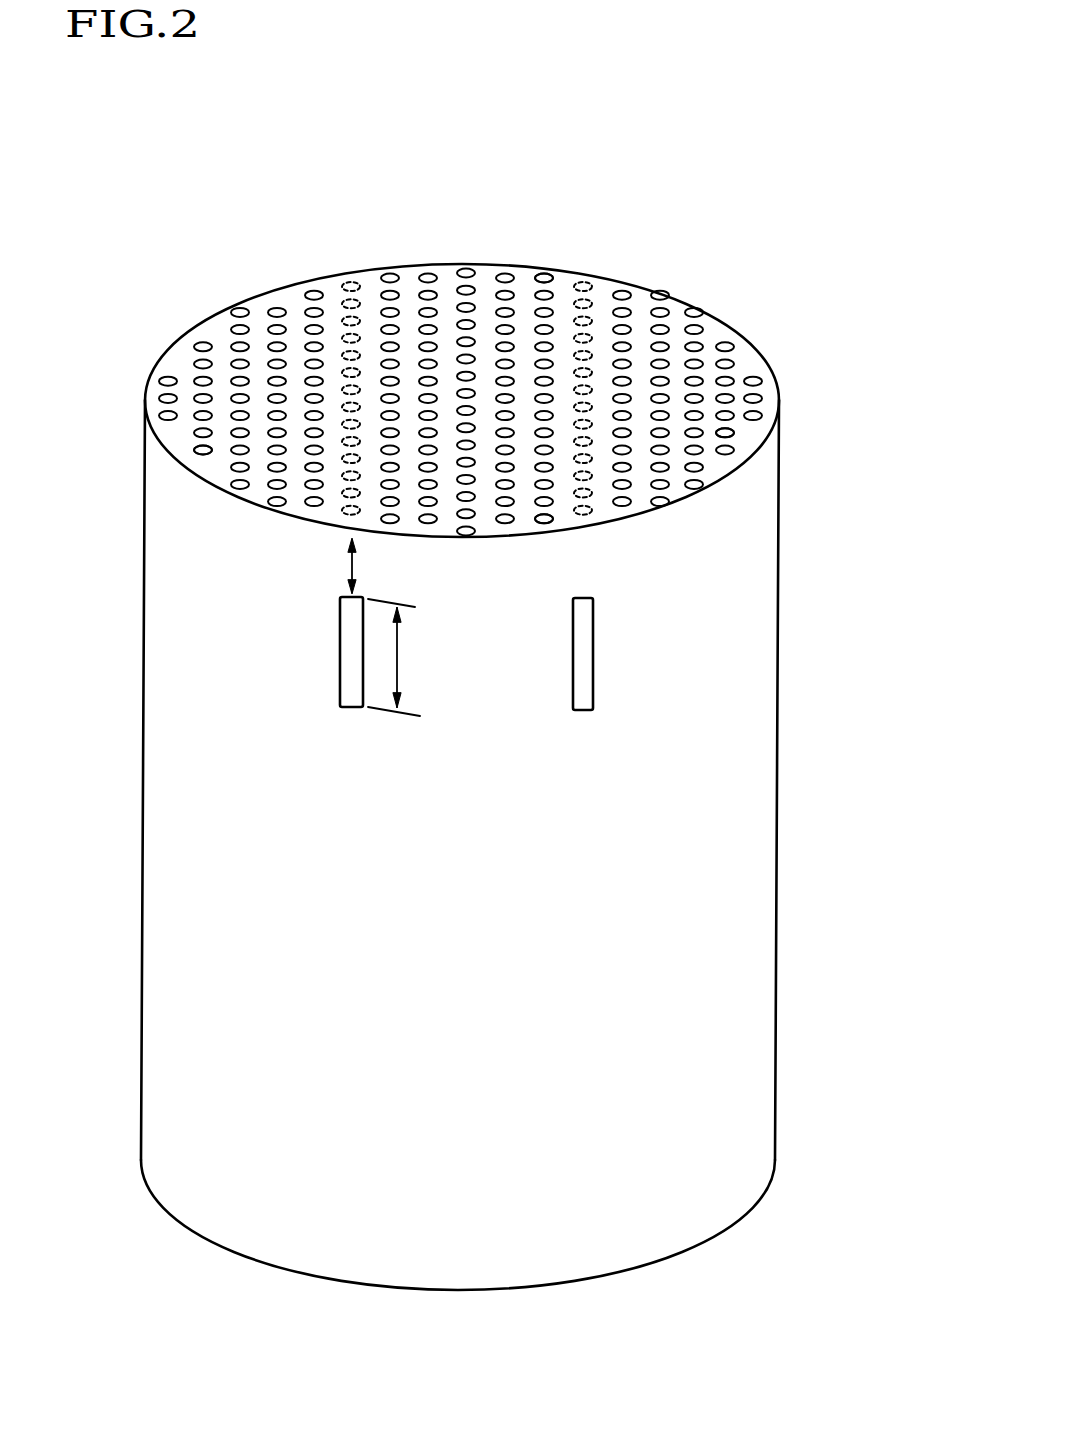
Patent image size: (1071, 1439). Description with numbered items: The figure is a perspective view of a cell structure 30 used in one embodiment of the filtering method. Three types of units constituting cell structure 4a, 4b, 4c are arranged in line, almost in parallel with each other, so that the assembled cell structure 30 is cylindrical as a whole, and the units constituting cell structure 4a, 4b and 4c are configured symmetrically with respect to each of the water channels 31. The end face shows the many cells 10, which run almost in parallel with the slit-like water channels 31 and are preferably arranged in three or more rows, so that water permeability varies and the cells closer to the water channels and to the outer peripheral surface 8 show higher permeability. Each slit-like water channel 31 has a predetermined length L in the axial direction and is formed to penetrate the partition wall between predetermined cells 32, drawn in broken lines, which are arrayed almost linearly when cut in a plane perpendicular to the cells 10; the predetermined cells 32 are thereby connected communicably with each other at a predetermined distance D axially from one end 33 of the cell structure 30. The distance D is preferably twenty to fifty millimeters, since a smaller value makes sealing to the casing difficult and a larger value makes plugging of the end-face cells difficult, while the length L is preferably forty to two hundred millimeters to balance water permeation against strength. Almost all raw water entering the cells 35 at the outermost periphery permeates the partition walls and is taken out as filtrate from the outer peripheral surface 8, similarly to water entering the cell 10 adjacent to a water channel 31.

The unit constituting cell structure 4a is at (460, 366).
The unit constituting cell structure 4b is at (459, 366).
The unit constituting cell structure 4c is at (466, 374).
The outer peripheral surface 8 is at (776, 913).
The cell 10 is at (201, 449).
The cell structure 30 is at (124, 620).
The slit-like water channel 31 is at (339, 680).
The predetermined cell 32 is at (353, 275).
The one end 33 is at (701, 495).
The cell located at outmost periphery 35 is at (546, 279).
The distance D is at (345, 555).
The predetermined length L is at (397, 665).